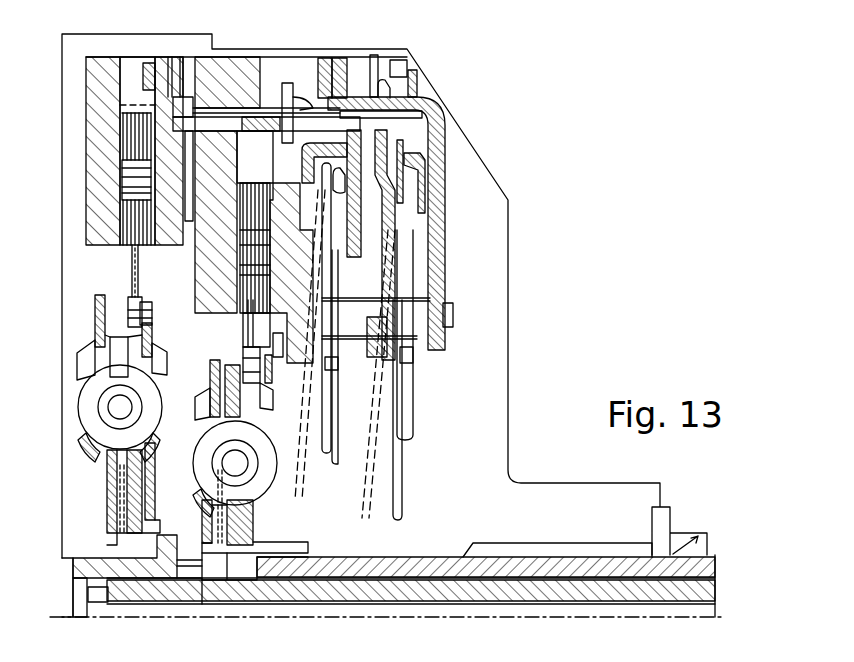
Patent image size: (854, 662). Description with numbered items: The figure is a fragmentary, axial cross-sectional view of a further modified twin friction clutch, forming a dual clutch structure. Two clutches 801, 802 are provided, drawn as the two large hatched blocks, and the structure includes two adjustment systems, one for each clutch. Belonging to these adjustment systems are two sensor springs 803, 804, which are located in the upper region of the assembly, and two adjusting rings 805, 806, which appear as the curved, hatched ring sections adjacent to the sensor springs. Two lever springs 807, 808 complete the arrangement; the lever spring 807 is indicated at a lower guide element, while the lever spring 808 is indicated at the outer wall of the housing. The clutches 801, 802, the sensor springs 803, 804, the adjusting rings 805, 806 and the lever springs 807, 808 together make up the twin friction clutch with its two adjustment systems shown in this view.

The clutch 801 is at (100, 78).
The clutch 802 is at (217, 170).
The sensor spring 803 is at (372, 106).
The sensor spring 804 is at (330, 150).
The adjusting ring 805 is at (424, 157).
The adjusting ring 806 is at (323, 177).
The lever spring 807 is at (403, 478).
The lever spring 808 is at (503, 405).